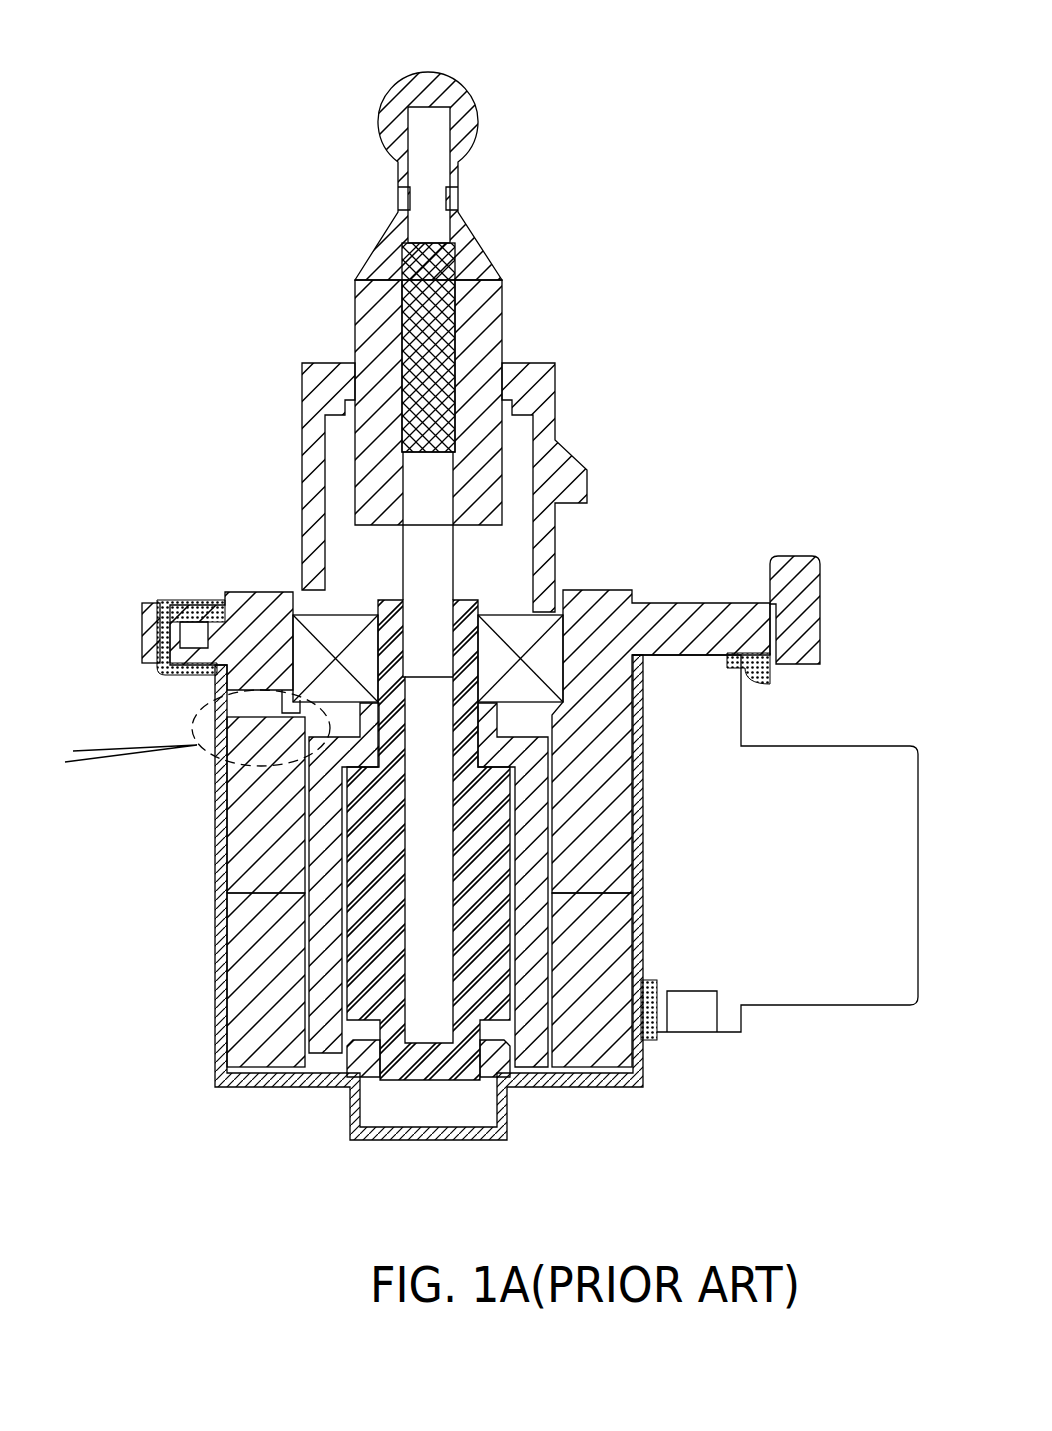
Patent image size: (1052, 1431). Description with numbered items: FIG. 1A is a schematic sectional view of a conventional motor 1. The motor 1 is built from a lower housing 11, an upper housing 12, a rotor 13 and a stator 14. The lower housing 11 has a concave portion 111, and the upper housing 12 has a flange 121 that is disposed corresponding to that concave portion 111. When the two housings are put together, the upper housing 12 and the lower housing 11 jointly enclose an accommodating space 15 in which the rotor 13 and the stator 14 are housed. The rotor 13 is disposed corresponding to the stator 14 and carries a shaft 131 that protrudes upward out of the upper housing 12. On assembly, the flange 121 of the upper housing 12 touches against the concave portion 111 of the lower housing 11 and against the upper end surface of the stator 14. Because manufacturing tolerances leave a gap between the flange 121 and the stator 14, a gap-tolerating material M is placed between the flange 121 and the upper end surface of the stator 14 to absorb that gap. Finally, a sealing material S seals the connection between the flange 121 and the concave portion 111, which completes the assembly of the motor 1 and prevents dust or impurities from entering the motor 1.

The motor 1 is at (170, 36).
The lower housing 11 is at (215, 1047).
The concave portion 111 is at (143, 655).
The upper housing 12 is at (310, 437).
The flange 121 is at (263, 590).
The rotor 13 is at (537, 1043).
The shaft 131 is at (452, 267).
The stator 14 is at (232, 790).
The accommodating space 15 is at (505, 578).
The sealing material S is at (188, 600).
The gap-tolerating material M is at (233, 704).